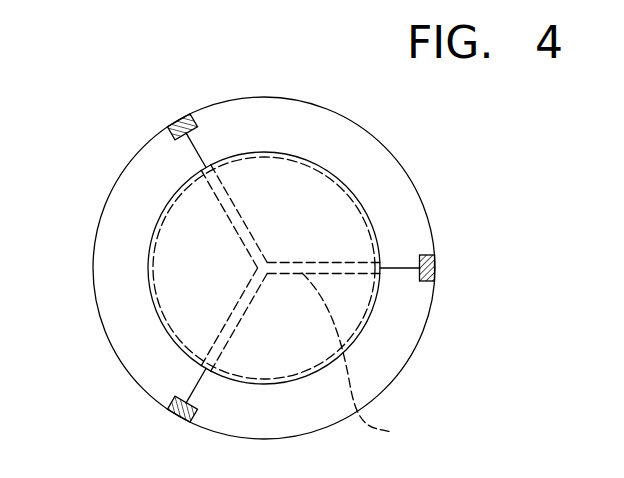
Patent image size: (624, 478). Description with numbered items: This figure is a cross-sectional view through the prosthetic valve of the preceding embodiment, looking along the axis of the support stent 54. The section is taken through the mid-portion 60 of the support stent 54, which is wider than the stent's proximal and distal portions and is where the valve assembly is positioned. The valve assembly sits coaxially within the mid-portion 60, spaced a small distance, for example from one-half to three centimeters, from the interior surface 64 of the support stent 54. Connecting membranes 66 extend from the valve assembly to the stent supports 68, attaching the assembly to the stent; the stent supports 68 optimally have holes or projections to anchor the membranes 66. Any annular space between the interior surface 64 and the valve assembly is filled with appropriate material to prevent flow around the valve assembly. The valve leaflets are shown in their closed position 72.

The support stent 54 is at (267, 264).
The mid-portion 60 is at (385, 147).
The interior surface 64 is at (326, 114).
The connecting membrane 66 is at (193, 382).
The stent supports 68 is at (436, 264).
The closed position of valve leaflets 72 is at (363, 360).